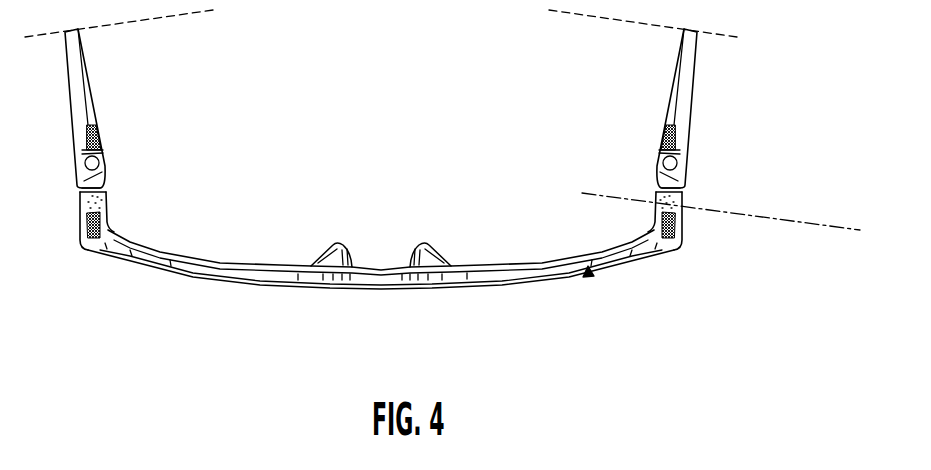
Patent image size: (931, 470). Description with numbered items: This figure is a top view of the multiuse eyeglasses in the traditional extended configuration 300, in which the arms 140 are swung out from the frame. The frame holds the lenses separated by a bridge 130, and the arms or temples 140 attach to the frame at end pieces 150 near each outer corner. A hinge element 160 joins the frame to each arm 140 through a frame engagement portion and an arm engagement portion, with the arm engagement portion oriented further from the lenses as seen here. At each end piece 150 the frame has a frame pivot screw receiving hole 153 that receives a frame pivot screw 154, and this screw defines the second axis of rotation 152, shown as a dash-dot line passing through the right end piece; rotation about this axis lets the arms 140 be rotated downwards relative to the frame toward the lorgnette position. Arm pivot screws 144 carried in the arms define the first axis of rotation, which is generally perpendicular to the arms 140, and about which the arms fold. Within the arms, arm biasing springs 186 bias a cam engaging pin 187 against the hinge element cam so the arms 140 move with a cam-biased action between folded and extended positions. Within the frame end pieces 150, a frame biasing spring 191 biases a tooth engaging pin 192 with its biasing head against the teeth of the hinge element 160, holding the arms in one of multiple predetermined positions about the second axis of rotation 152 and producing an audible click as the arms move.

The bridge 130 is at (377, 287).
The arms 140 is at (683, 82).
The arm pivot screws 144 is at (125, 99).
The end pieces 150 is at (667, 253).
The second axis of rotation 152 is at (827, 227).
The frame pivot screw receiving hole 153 is at (381, 185).
The frame pivot screw 154 is at (102, 200).
The hinge element 160 is at (100, 175).
The arm biasing springs 186 is at (145, 99).
The cam engaging pin 187 is at (100, 143).
The frame biasing spring 191 is at (186, 219).
The tooth engaging pin 192 is at (107, 225).
The traditional extended configuration 300 is at (589, 272).